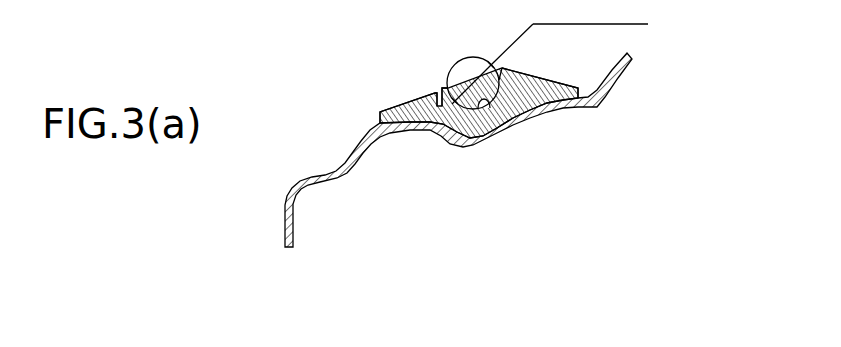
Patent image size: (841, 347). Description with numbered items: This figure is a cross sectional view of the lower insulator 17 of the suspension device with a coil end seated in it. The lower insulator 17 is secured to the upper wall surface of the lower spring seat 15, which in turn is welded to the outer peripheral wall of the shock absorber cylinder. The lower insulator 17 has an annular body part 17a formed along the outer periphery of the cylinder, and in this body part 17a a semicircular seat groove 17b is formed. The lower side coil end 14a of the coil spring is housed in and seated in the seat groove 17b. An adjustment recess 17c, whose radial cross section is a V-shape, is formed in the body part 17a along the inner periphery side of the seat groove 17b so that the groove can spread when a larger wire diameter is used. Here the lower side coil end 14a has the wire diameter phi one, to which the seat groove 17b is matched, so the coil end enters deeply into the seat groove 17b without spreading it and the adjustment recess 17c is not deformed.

The lower side coil end 14a is at (473, 57).
The lower spring seat 15 is at (562, 110).
The lower insulator 17 is at (380, 38).
The body part 17a is at (533, 73).
The seat groove 17b is at (491, 118).
The adjustment recess 17c is at (433, 92).